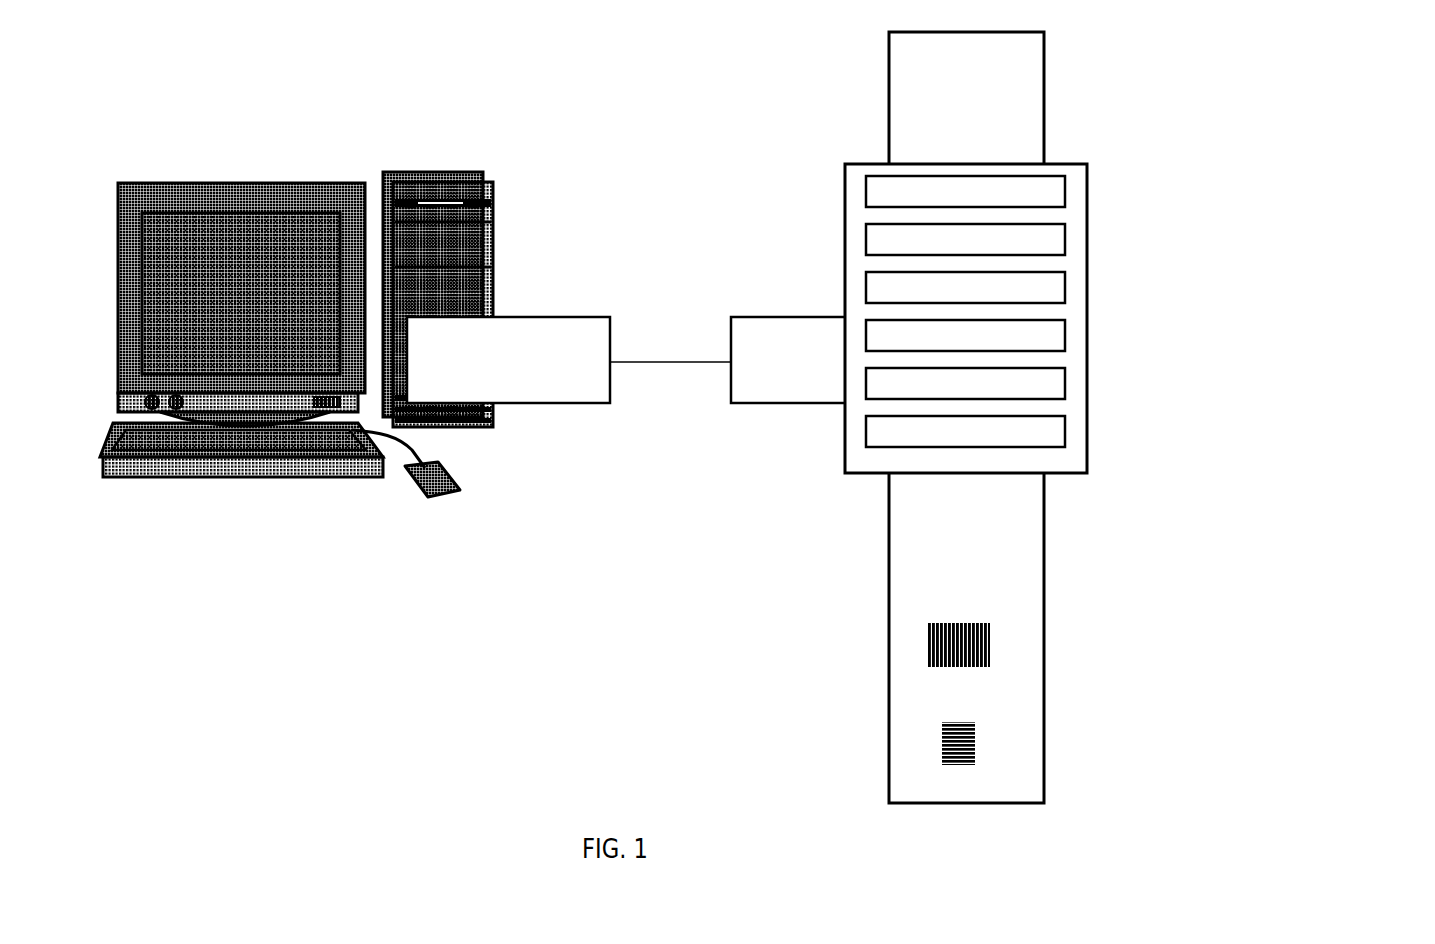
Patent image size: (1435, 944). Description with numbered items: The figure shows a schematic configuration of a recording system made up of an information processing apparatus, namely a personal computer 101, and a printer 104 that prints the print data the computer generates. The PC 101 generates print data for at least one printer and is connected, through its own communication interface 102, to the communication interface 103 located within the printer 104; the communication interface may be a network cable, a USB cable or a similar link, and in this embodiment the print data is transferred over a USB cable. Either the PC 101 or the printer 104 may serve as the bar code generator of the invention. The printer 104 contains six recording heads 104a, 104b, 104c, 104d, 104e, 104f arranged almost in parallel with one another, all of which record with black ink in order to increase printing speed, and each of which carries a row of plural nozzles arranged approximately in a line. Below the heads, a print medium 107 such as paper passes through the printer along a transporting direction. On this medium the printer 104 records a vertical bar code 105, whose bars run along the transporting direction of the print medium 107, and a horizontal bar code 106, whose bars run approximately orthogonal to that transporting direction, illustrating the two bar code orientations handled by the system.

The information processing apparatus (PC) 101 is at (340, 477).
The communication interface 102 is at (536, 403).
The communication interface 103 is at (813, 403).
The printer 104 is at (1087, 164).
The recording head 104a is at (1065, 190).
The recording head 104b is at (1065, 238).
The recording head 104c is at (1065, 286).
The recording head 104d is at (1065, 334).
The recording head 104e is at (1065, 382).
The recording head 104f is at (1065, 430).
The vertical bar code 105 is at (990, 638).
The horizontal bar code 106 is at (975, 742).
The print medium 107 is at (1044, 797).